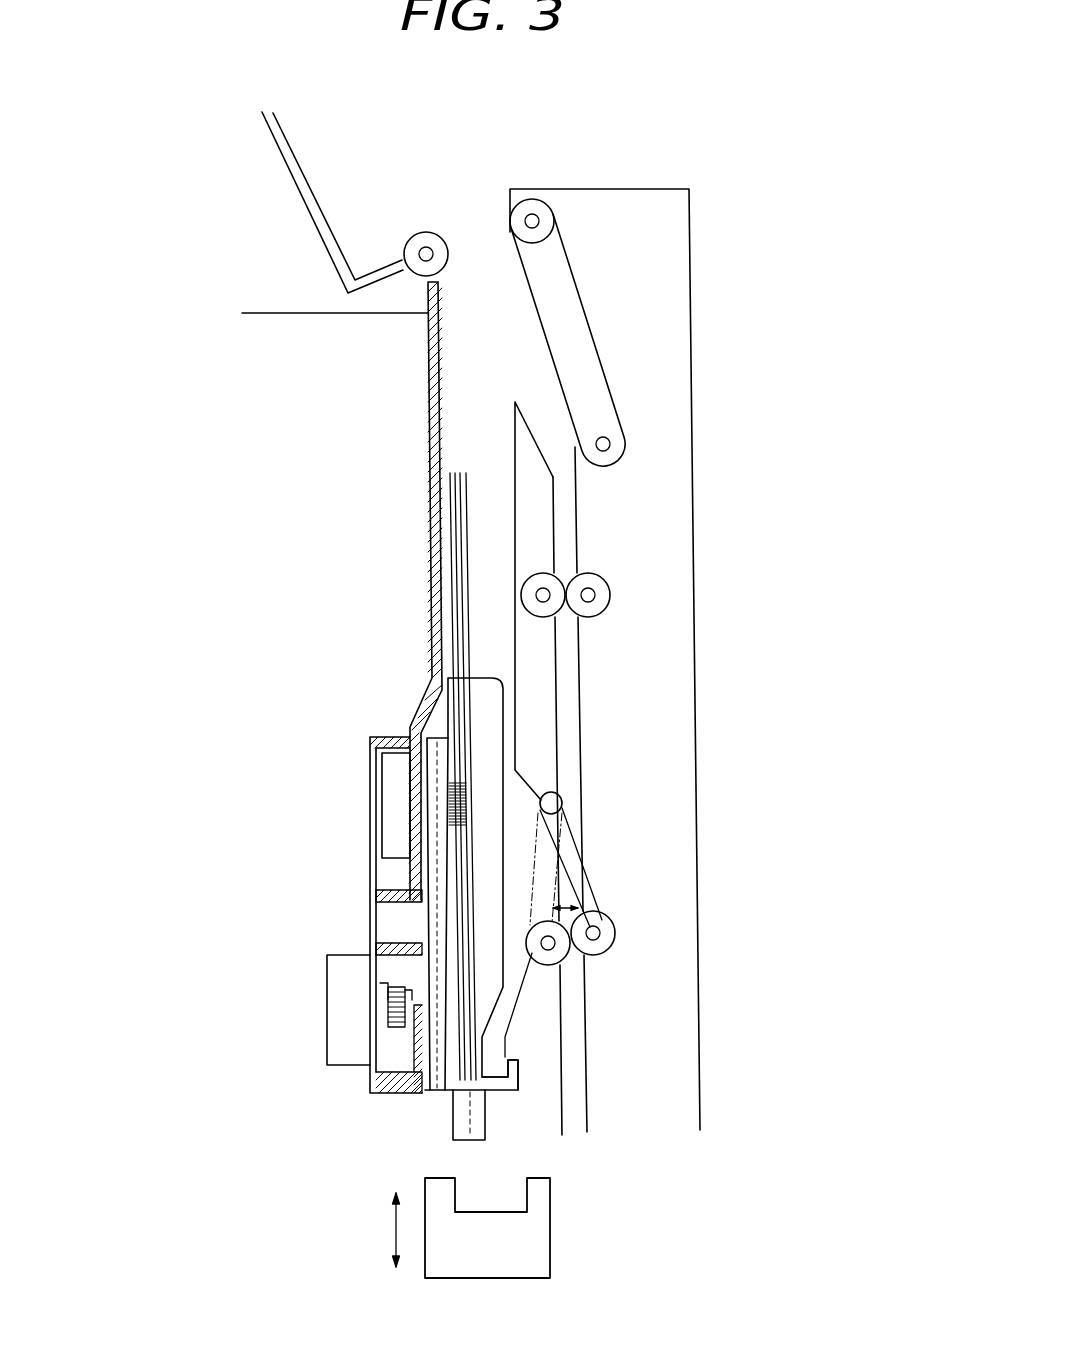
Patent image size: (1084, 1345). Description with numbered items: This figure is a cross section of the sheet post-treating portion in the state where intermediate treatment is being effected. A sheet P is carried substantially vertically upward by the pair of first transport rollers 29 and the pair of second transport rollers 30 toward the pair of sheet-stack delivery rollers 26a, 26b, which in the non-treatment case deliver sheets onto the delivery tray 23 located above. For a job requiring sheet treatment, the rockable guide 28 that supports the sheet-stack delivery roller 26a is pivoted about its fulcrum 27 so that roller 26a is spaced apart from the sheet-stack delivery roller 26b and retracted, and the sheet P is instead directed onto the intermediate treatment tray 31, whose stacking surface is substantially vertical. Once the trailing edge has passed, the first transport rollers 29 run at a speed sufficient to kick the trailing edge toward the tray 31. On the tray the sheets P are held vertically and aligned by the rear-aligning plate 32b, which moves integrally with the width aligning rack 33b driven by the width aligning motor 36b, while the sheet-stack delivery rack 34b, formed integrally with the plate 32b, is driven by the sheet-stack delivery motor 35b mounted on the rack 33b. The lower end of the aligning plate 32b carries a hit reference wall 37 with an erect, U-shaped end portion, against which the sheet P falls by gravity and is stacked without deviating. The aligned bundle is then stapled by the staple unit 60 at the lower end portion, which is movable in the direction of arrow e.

The delivery tray 23 is at (296, 148).
The sheet-stack delivery roller 26a is at (535, 210).
The sheet-stack delivery roller 26b is at (426, 232).
The fulcrum 27 is at (610, 444).
The rockable guide 28 is at (570, 335).
The pair of first transport rollers 29 is at (615, 928).
The pair of second transport rollers 30 is at (618, 585).
The intermediate treatment tray 31 is at (430, 492).
The rear-aligning plate 32b is at (537, 690).
The width aligning rack 33b is at (388, 968).
The sheet-stack delivery rack 34b is at (460, 1115).
The sheet-stack delivery motor 35b is at (392, 798).
The width aligning motor 36b is at (335, 1007).
The hit reference wall 37 is at (507, 1100).
The staple unit 60 is at (538, 1222).
The sheet P is at (470, 485).
The arrow e is at (387, 1230).